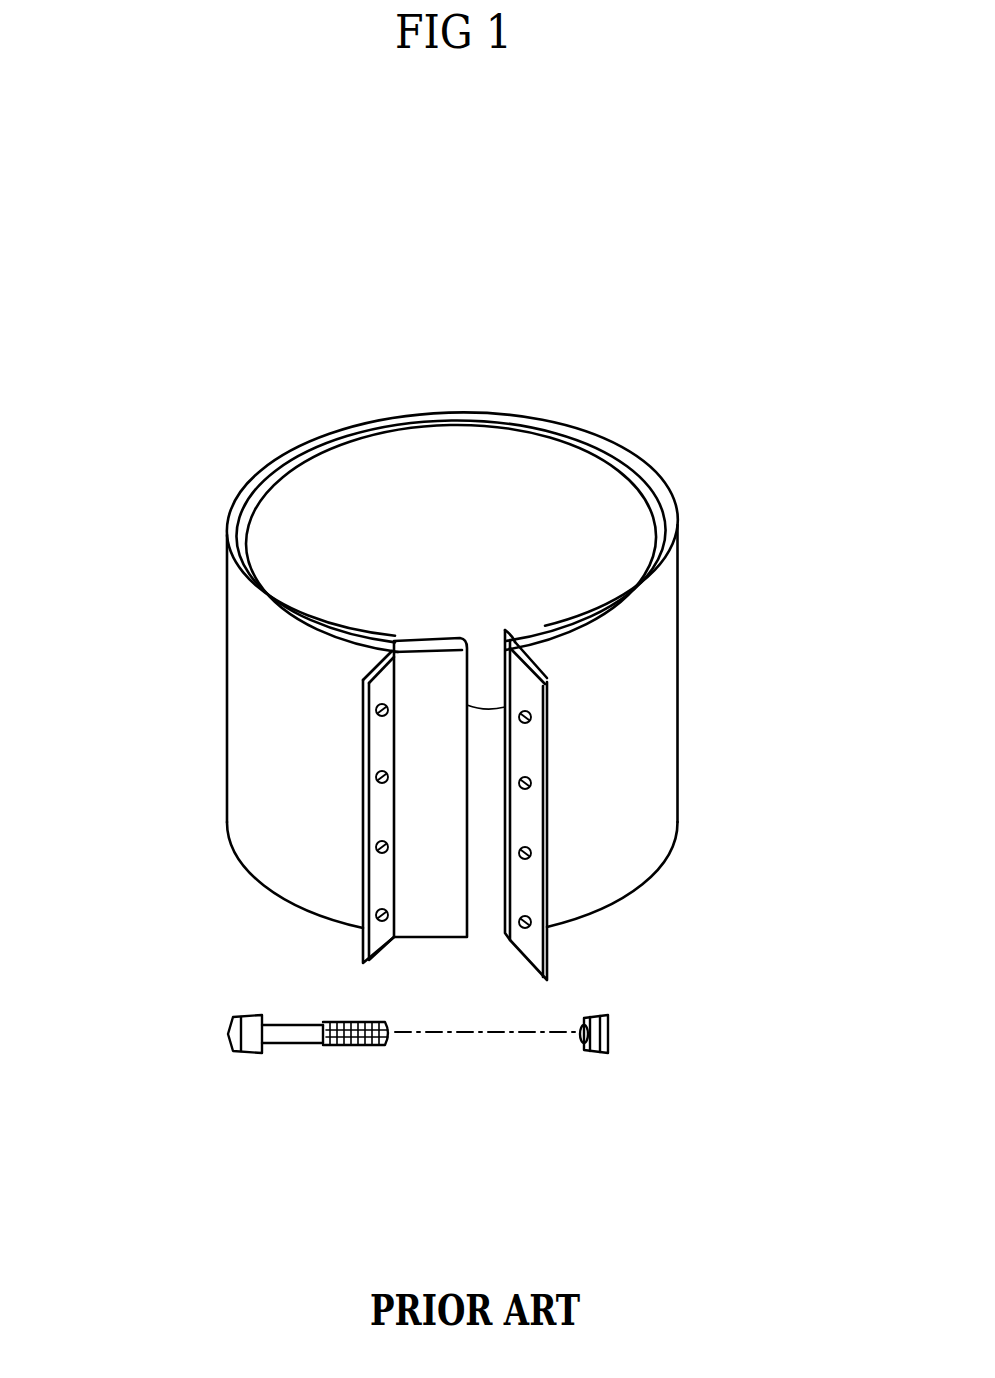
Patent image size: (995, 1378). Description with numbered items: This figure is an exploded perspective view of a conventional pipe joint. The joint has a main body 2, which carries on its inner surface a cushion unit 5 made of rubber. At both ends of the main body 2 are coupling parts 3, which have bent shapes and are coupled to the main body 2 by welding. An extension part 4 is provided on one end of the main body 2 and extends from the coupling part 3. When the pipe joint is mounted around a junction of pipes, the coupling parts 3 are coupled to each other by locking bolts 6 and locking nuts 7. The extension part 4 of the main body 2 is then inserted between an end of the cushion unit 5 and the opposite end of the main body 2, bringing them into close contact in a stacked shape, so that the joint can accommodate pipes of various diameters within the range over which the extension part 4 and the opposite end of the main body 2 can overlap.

The main body 2 is at (630, 705).
The coupling parts 3 is at (533, 822).
The extension part 4 is at (423, 780).
The cushion unit 5 is at (252, 533).
The locking bolts 6 is at (300, 1040).
The locking nuts 7 is at (590, 1052).